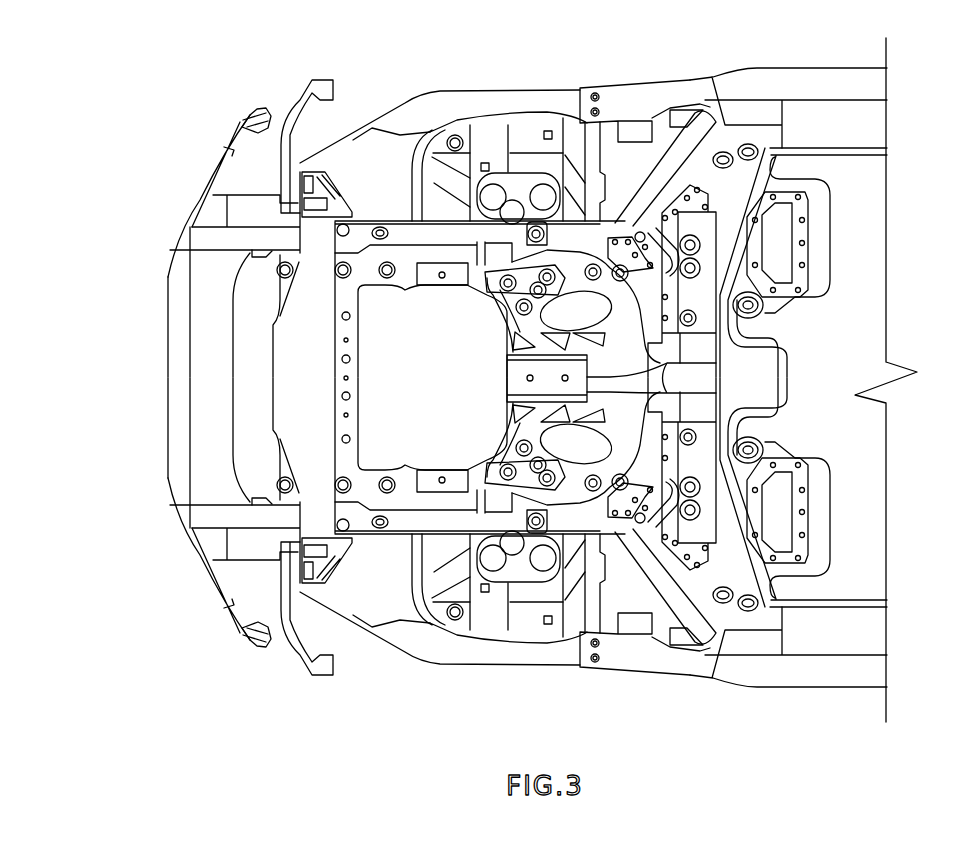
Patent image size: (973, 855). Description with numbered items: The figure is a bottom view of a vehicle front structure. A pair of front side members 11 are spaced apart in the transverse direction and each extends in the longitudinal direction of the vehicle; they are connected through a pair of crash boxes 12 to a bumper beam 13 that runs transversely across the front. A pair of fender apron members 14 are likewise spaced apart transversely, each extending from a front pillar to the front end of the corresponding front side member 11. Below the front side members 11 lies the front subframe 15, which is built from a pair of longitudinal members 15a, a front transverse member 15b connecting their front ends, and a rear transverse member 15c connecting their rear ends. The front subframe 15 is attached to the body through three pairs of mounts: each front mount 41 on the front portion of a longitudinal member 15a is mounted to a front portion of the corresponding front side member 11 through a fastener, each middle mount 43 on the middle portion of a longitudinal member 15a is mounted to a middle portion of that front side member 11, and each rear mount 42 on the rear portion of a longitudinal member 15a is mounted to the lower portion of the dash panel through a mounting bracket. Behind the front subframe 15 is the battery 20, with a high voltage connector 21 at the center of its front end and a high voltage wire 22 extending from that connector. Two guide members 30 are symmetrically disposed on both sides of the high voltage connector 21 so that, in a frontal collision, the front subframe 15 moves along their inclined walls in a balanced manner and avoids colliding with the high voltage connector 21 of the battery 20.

The front side member 11 is at (477, 226).
The crash box 12 is at (247, 205).
The bumper beam 13 is at (177, 442).
The fender apron member 14 is at (448, 102).
The front subframe 15 is at (320, 370).
The longitudinal member 15a is at (437, 283).
The front transverse member 15b is at (350, 348).
The rear transverse member 15c is at (515, 380).
The battery 20 is at (862, 295).
The high voltage connector 21 is at (697, 378).
The high voltage wire 22 is at (630, 373).
The guide member 30 is at (707, 230).
The front mount 41 is at (344, 222).
The rear mount 42 is at (680, 285).
The middle mount 43 is at (536, 226).